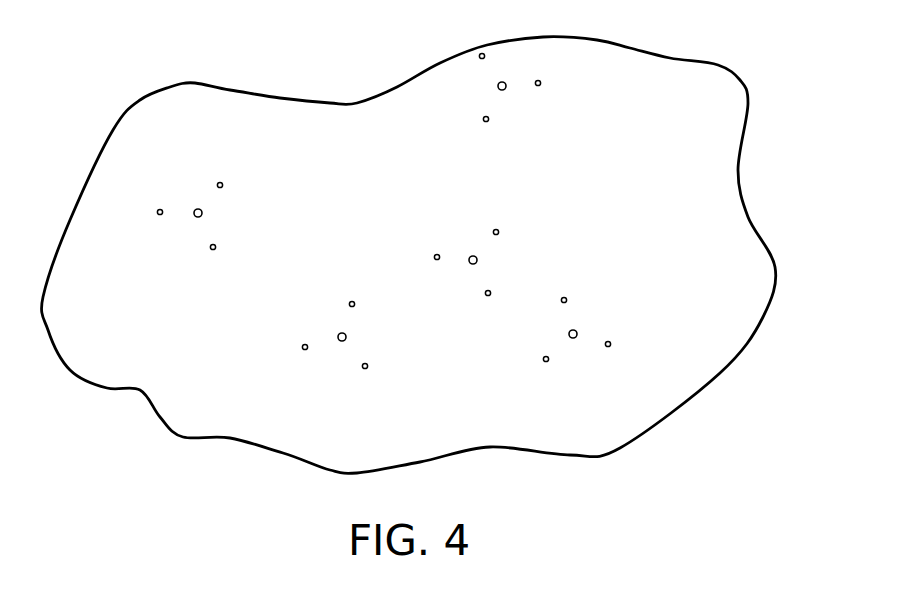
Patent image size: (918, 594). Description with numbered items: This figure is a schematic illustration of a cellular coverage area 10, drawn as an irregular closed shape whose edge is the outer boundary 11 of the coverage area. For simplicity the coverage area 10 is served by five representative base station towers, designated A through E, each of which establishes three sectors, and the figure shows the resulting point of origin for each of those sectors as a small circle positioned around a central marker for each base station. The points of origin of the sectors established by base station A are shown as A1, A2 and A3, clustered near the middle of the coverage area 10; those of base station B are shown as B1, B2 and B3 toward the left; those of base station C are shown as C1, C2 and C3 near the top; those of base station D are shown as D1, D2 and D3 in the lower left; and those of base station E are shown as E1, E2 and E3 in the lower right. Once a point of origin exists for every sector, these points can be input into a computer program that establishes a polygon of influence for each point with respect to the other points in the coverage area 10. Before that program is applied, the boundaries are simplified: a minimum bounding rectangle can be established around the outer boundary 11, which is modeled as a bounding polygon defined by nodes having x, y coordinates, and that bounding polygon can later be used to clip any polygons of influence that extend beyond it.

The cellular coverage area 10 is at (438, 255).
The outer boundary 11 is at (750, 213).
The point of origin of a sector of base station A A1 is at (422, 258).
The point of origin of a sector of base station A A2 is at (513, 233).
The point of origin of a sector of base station A A3 is at (489, 308).
The point of origin of a sector of base station B B1 is at (237, 186).
The point of origin of a sector of base station B B2 is at (213, 262).
The point of origin of a sector of base station B B3 is at (144, 213).
The point of origin of a sector of base station C C1 is at (555, 84).
The point of origin of a sector of base station C C2 is at (485, 133).
The point of origin of a sector of base station C C3 is at (467, 67).
The point of origin of a sector of base station D D1 is at (382, 367).
The point of origin of a sector of base station D D2 is at (288, 348).
The point of origin of a sector of base station D D3 is at (369, 305).
The point of origin of a sector of base station E E1 is at (624, 345).
The point of origin of a sector of base station E E2 is at (544, 374).
The point of origin of a sector of base station E E3 is at (580, 301).